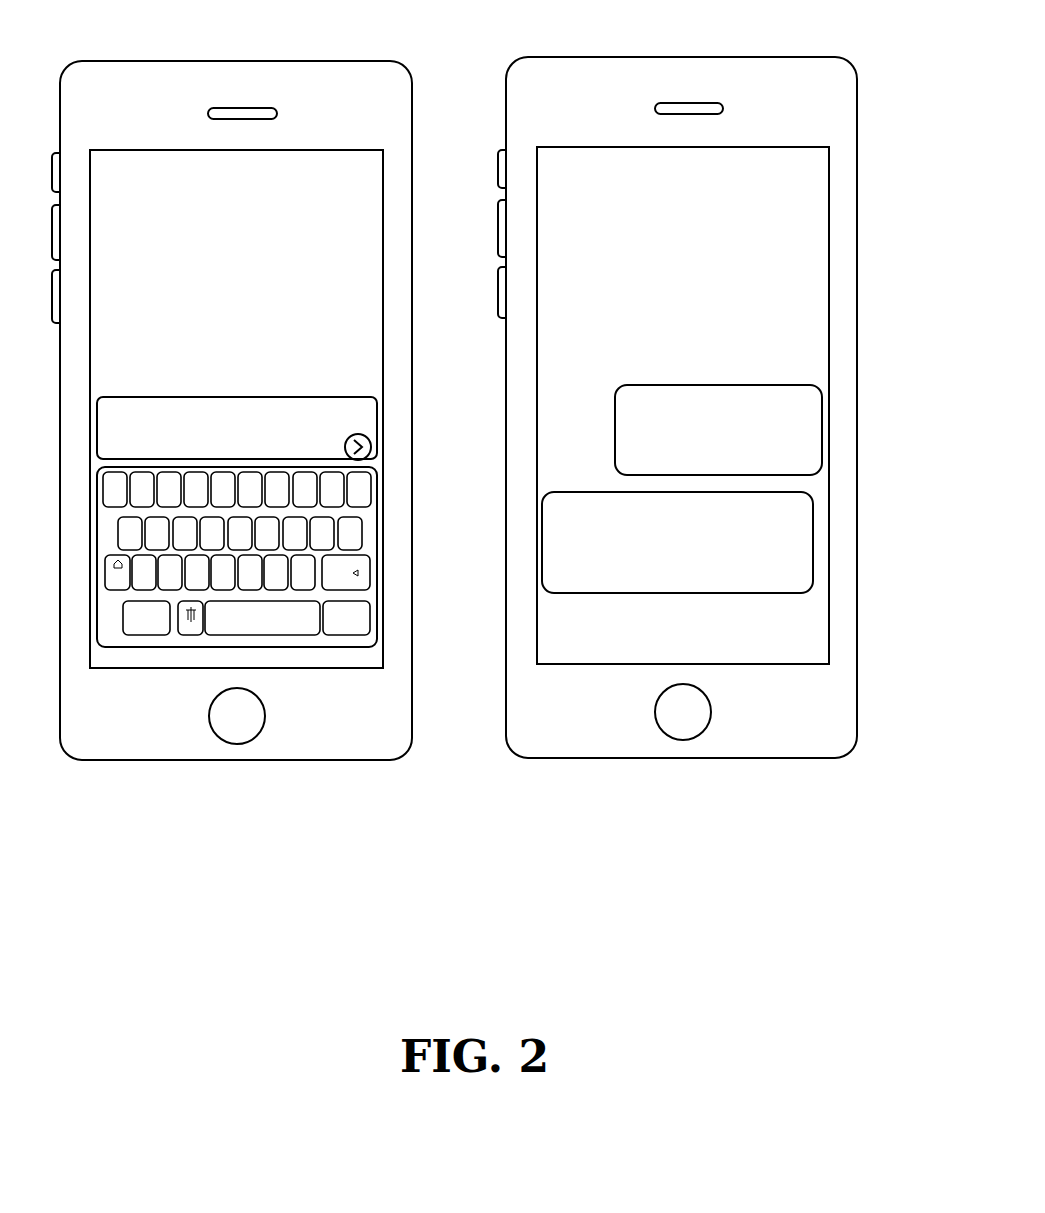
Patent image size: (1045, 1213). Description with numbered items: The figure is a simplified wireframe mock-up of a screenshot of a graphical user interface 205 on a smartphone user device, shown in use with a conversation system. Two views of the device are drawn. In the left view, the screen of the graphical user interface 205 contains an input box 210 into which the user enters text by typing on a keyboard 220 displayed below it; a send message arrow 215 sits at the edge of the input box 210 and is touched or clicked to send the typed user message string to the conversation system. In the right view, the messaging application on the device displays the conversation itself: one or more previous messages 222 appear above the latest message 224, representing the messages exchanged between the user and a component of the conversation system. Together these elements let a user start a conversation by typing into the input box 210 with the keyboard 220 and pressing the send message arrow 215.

The graphical user interface 205 is at (157, 183).
The input box 210 is at (347, 395).
The send message arrow 215 is at (373, 447).
The keyboard 220 is at (377, 557).
The previous messages 222 is at (790, 382).
The latest message 224 is at (793, 493).